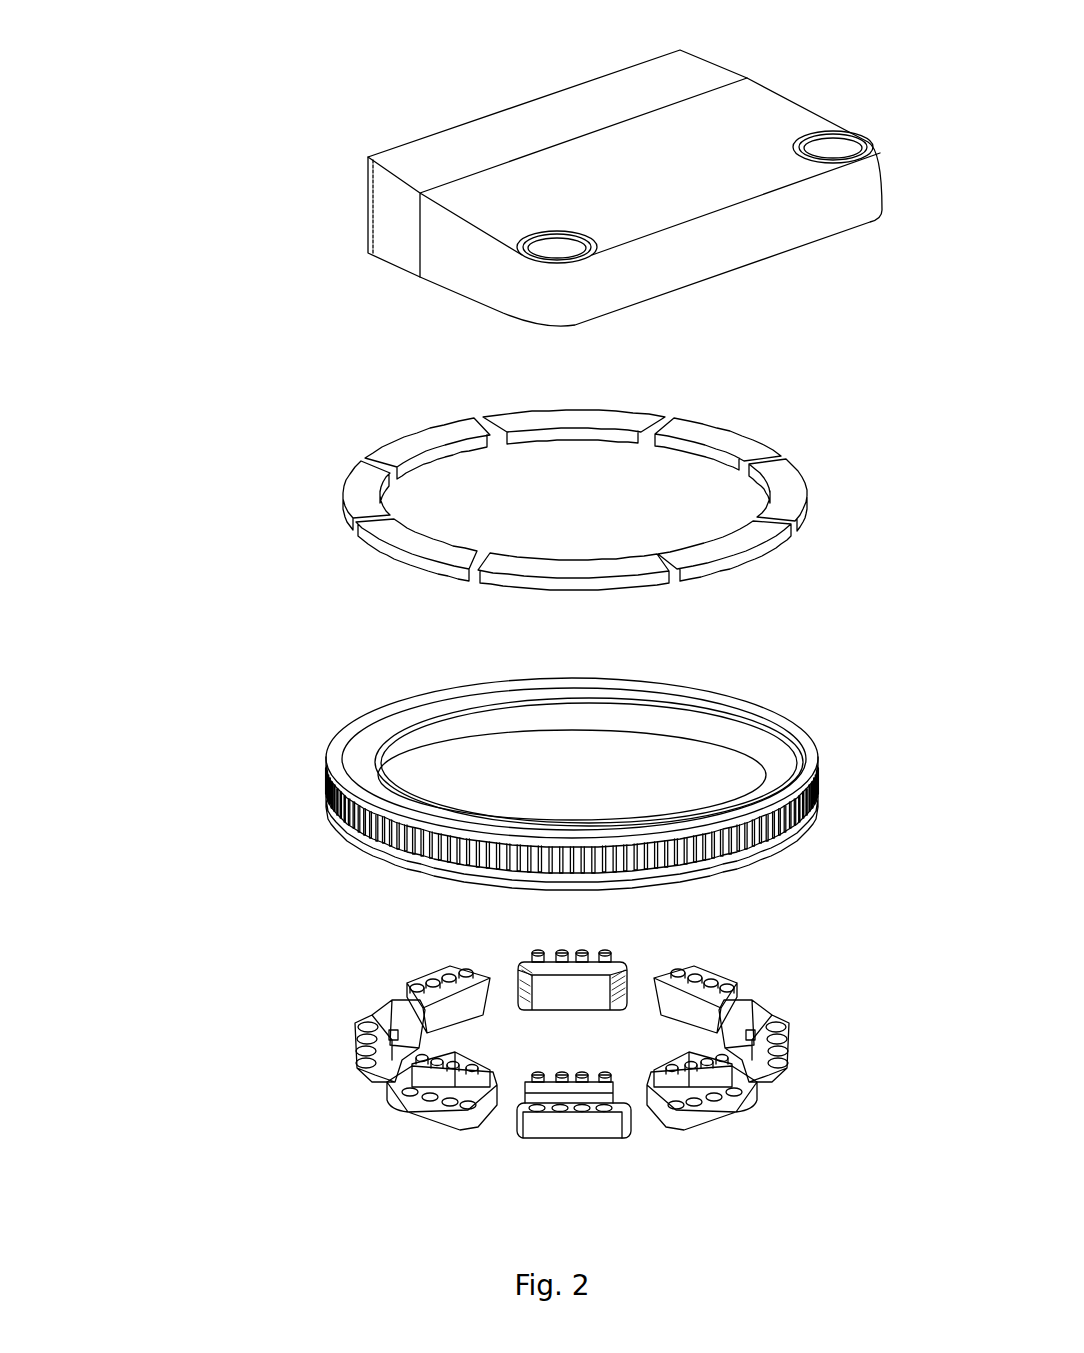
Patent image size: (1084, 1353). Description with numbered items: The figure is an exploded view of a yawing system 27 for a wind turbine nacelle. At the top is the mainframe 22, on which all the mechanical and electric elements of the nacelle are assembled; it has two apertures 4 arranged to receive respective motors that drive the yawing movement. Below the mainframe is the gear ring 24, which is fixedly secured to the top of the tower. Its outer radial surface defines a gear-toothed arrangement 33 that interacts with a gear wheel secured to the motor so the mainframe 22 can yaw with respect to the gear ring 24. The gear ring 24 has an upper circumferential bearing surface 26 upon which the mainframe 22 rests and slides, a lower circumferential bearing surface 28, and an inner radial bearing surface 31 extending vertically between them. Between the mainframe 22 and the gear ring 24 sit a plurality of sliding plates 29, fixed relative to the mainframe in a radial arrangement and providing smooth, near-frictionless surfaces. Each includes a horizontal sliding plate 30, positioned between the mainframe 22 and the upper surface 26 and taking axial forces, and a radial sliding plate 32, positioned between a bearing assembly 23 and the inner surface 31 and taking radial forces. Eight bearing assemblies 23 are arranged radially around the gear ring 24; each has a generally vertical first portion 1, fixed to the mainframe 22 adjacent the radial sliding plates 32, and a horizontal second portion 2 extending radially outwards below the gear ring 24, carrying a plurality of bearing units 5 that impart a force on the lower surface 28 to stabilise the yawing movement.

The first portion 1 is at (490, 1093).
The second portion 2 is at (423, 1098).
The apertures 4 is at (552, 248).
The bearing units 5 is at (582, 1115).
The mainframe 22 is at (625, 164).
The bearing assemblies 23 is at (587, 1072).
The gear ring 24 is at (616, 778).
The upper circumferential bearing surface 26 is at (783, 778).
The yawing system 27 is at (187, 659).
The lower circumferential bearing surface 28 is at (710, 725).
The sliding plates 29 is at (531, 491).
The horizontal sliding plate 30 is at (358, 502).
The inner radial bearing surface 31 is at (432, 723).
The radial sliding plate 32 is at (387, 480).
The gear-toothed arrangement 33 is at (818, 788).